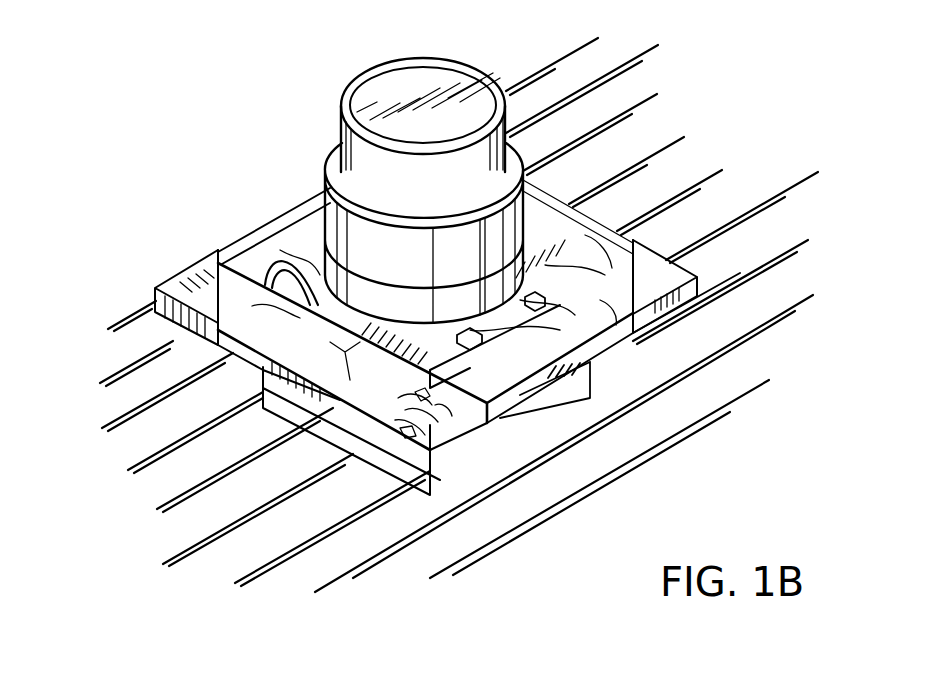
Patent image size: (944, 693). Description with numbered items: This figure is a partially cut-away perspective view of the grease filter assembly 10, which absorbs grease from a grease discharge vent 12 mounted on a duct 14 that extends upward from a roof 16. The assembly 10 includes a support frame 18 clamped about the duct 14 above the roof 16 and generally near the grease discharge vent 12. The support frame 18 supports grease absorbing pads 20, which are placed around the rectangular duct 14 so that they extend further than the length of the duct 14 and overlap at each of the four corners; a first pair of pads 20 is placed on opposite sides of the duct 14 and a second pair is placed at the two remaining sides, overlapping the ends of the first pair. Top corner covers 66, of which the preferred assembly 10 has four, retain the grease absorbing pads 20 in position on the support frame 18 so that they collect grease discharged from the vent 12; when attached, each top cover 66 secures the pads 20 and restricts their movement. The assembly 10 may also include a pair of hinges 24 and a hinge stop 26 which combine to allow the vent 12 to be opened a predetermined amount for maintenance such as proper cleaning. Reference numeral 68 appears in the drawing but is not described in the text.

The grease filter assembly 10 is at (190, 240).
The grease discharge vent 12 is at (396, 266).
The duct 14 is at (578, 407).
The roof 16 is at (578, 484).
The support frame 18 is at (400, 445).
The grease absorbing pads 20 is at (300, 218).
The hinges 24 is at (460, 332).
The hinge stop 26 is at (265, 289).
The top corner covers 66 is at (187, 267).
The right end block 68 is at (665, 286).